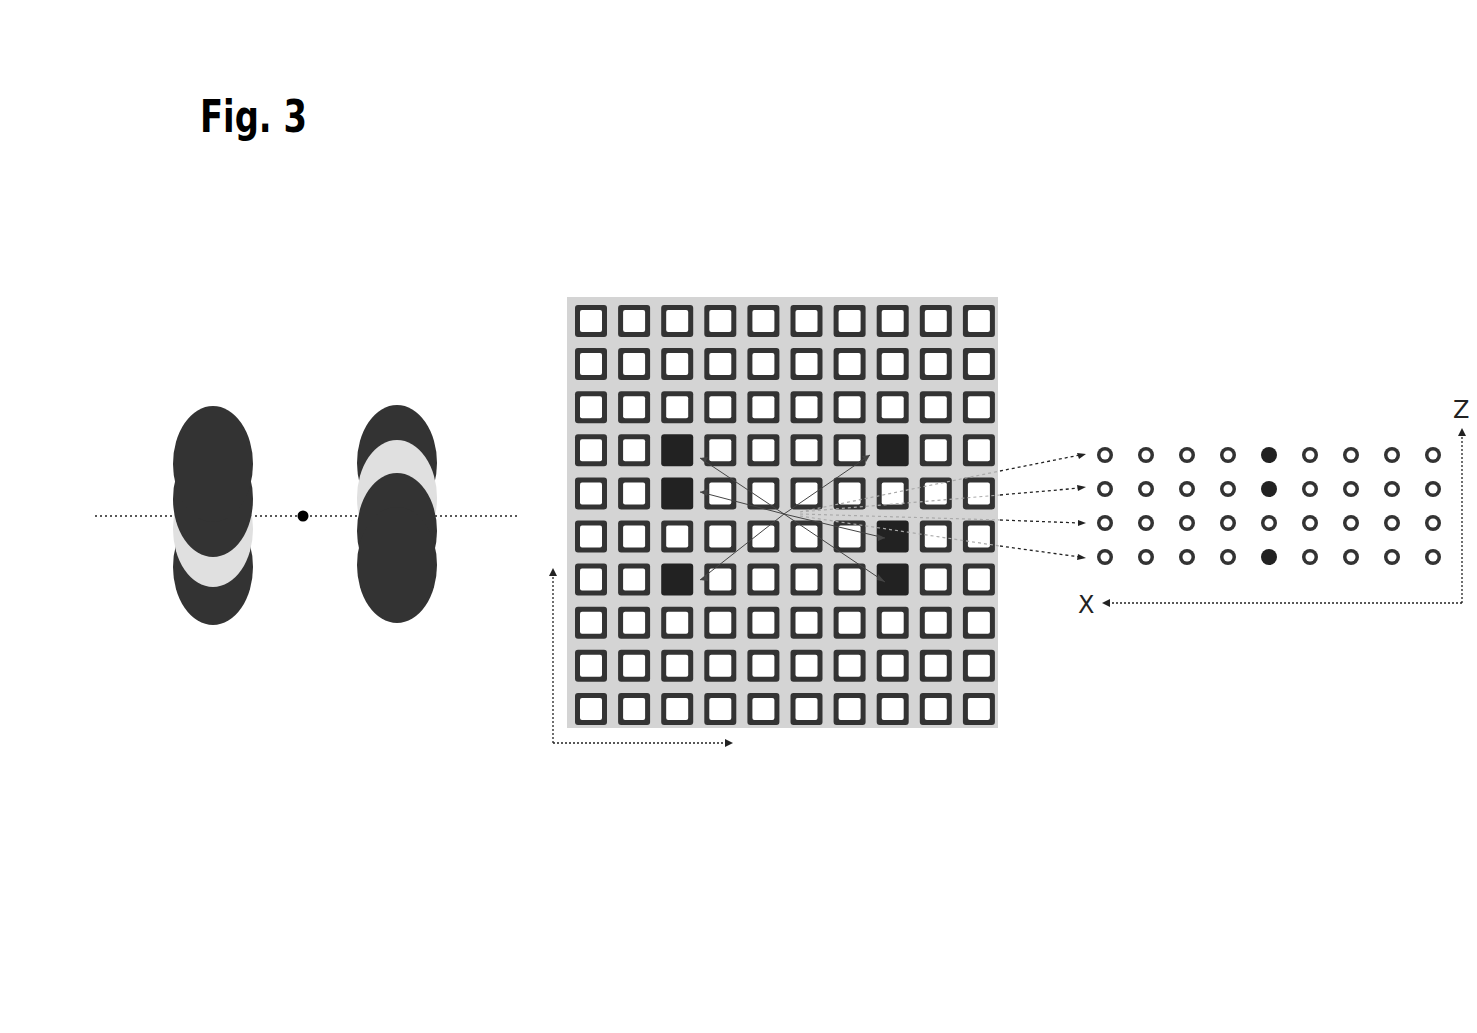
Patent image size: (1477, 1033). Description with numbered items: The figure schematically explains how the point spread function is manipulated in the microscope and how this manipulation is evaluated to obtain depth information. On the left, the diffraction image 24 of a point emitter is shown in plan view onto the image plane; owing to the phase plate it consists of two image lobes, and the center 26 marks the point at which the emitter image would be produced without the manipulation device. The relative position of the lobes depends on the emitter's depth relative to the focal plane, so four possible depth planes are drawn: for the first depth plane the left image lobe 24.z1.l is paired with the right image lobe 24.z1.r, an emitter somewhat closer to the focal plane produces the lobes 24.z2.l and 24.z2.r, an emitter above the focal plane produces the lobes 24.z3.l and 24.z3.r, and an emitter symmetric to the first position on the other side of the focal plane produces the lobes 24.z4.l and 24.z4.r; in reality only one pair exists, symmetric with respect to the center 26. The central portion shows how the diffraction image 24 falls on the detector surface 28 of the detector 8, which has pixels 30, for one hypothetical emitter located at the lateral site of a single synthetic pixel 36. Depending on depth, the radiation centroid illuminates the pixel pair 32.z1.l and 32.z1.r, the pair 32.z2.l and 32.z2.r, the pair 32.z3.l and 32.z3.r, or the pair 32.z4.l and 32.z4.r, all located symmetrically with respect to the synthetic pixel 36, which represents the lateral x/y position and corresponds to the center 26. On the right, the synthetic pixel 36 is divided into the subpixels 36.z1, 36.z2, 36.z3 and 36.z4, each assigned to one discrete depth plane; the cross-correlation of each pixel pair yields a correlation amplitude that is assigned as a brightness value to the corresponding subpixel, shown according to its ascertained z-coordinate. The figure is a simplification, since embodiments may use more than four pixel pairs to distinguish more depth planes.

The detector 8 is at (985, 248).
The diffraction image 24 is at (322, 297).
The left image lobe 24.z1.l is at (228, 423).
The left image lobe 24.z2.l is at (178, 500).
The left image lobe 24.z3.l is at (300, 550).
The left image lobe 24.z4.l is at (208, 618).
The right image lobe 24.z1.r is at (393, 620).
The right image lobe 24.z2.r is at (432, 518).
The right image lobe 24.z3.r is at (488, 478).
The right image lobe 24.z4.r is at (415, 422).
The center 26 is at (303, 510).
The detector surface 28 is at (788, 480).
The pixels 30 is at (715, 320).
The pixel 32.z1.l is at (668, 447).
The pixel 32.z2.l is at (674, 488).
The pixel 32.z3.l is at (668, 539).
The pixel 32.z4.l is at (672, 592).
The pixel 32.z1.r is at (894, 596).
The pixel 32.z2.r is at (900, 540).
The pixel 32.z3.r is at (895, 490).
The pixel 32.z4.r is at (895, 440).
The synthetic pixel 36 is at (785, 521).
The subpixel 36.z1 is at (1268, 453).
The subpixel 36.z2 is at (1270, 488).
The subpixel 36.z3 is at (1270, 523).
The subpixel 36.z4 is at (1268, 565).